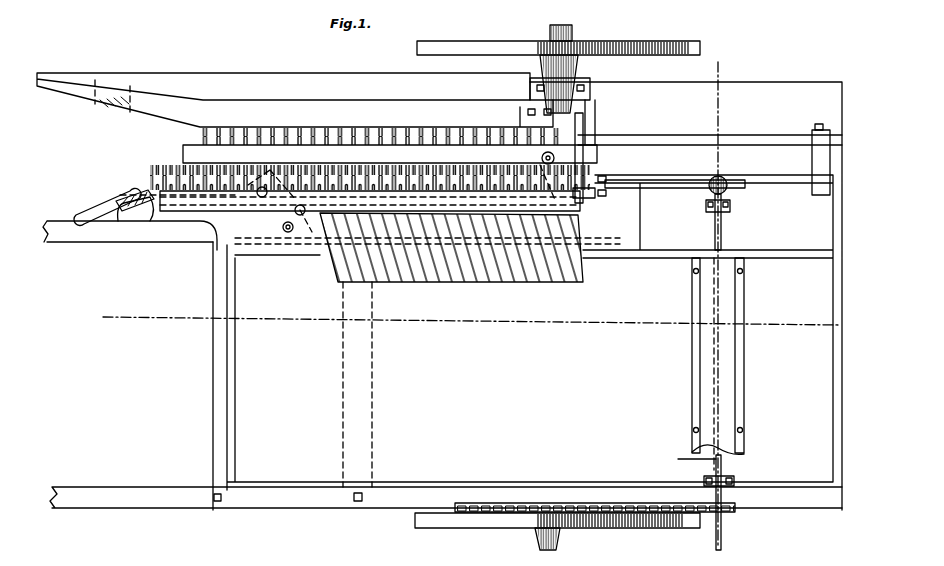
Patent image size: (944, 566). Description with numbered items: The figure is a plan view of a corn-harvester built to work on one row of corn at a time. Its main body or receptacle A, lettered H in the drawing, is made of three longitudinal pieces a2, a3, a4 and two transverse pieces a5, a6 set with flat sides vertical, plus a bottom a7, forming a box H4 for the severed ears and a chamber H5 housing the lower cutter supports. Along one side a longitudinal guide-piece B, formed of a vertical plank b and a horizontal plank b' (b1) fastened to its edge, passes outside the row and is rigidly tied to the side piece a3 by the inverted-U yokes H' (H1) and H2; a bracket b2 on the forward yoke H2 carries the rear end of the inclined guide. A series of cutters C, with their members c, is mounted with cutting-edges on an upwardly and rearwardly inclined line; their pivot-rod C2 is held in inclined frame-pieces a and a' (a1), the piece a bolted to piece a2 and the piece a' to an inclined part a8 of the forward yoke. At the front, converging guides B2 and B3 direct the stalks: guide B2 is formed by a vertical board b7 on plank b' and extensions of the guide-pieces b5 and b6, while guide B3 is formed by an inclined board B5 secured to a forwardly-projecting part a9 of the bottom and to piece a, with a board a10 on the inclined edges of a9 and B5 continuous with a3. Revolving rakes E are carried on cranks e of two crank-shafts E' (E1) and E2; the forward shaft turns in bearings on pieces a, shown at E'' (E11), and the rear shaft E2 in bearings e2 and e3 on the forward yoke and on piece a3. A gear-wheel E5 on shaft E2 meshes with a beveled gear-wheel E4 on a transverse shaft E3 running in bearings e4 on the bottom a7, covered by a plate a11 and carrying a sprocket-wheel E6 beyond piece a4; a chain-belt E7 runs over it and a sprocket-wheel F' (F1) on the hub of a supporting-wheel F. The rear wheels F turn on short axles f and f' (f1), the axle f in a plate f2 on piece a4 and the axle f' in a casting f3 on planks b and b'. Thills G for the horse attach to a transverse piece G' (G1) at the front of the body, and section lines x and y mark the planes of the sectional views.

The main body A is at (527, 296).
The main body H is at (527, 296).
The inclined frame-piece a is at (130, 235).
The inclined frame-piece a' is at (603, 213).
The inclined frame-piece a1 is at (603, 213).
The longitudinal piece a2 is at (685, 256).
The longitudinal side piece a3 is at (758, 180).
The longitudinal side piece a4 is at (652, 487).
The transverse piece a5 is at (237, 342).
The transverse piece a6 is at (835, 405).
The bottom a7 is at (462, 400).
The inclined part of forward yoke a8 is at (620, 200).
The forwardly-projecting part of bottom a9 is at (138, 218).
The board a10 is at (118, 202).
The plate a11 is at (692, 398).
The longitudinal guide-piece B is at (313, 109).
The converging guide B2 is at (124, 116).
The converging guide B3 is at (140, 194).
The inclined board B5 is at (427, 234).
The plank b is at (625, 150).
The plank b' is at (701, 100).
The plank b1 is at (701, 100).
The plate or bracket b2 is at (565, 112).
The guide-piece b5 is at (323, 130).
The guide-piece b6 is at (302, 118).
The vertical board b7 is at (105, 110).
The cutters C is at (451, 247).
The pivot-rod C2 is at (617, 228).
The cam plate slots c is at (395, 280).
The revolving rakes E is at (373, 167).
The forward crank-shaft E' is at (350, 201).
The forward crank-shaft E1 is at (350, 201).
The needle bar guide E'' is at (292, 235).
The needle bar guide E11 is at (290, 225).
The rear crank-shaft E2 is at (655, 178).
The horizontal shaft E3 is at (703, 454).
The beveled gear-wheel E4 is at (735, 205).
The gear-wheel E5 is at (728, 192).
The sprocket-wheel E6 is at (727, 502).
The chain-belt E7 is at (637, 530).
The cranks e is at (290, 172).
The bearing e2 is at (605, 185).
The bearing e3 is at (696, 180).
The bearings e4 is at (726, 232).
The supporting wheels F is at (558, 285).
The sprocket-wheel F' is at (557, 535).
The sprocket-wheel F1 is at (504, 513).
The short axle f is at (547, 547).
The short axle f' is at (564, 23).
The short axle f1 is at (565, 26).
The plate f2 is at (538, 503).
The bracket or casting f3 is at (548, 80).
The thills G is at (446, 497).
The transverse horizontal piece G' is at (202, 380).
The transverse horizontal piece G1 is at (218, 370).
The yoke H' is at (810, 154).
The yoke H1 is at (814, 132).
The forward yoke H2 is at (600, 137).
The box or receptacle H4 is at (552, 380).
The chamber H5 is at (677, 228).
The section line x x is at (468, 311).
The section line y y is at (727, 310).